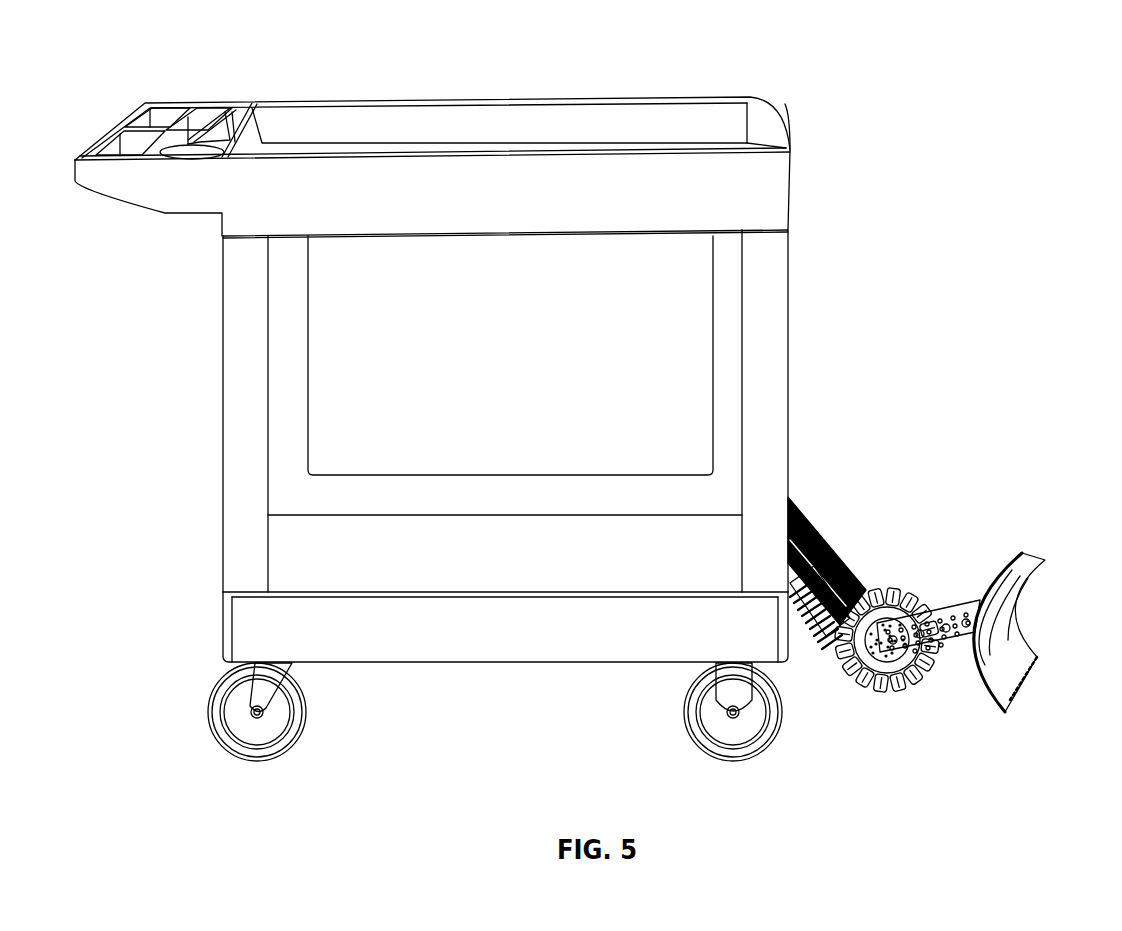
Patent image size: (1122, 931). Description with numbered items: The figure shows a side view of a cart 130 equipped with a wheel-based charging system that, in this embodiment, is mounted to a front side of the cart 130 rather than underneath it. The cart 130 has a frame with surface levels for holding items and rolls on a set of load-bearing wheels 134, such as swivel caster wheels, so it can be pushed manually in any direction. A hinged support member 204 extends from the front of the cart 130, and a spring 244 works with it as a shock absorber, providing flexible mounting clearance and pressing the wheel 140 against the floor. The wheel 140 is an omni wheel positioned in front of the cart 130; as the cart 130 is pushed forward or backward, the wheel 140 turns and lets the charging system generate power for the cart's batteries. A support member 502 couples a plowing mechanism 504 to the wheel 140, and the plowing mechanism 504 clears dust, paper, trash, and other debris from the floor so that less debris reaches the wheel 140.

The cart 130 is at (520, 99).
The wheels 134 is at (213, 736).
The support member 204 is at (810, 520).
The spring 244 is at (800, 635).
The wheel 140 is at (905, 582).
The support member 502 is at (918, 667).
The plowing mechanism 504 is at (1035, 558).